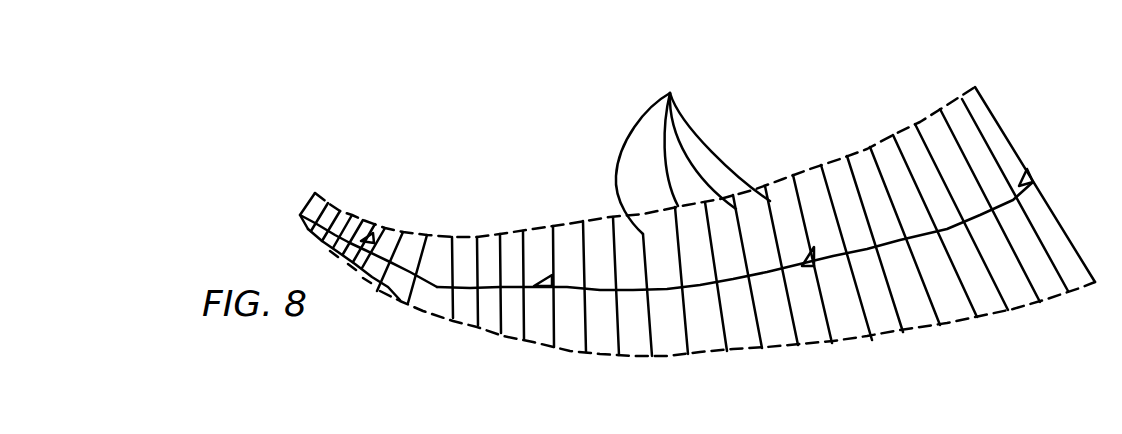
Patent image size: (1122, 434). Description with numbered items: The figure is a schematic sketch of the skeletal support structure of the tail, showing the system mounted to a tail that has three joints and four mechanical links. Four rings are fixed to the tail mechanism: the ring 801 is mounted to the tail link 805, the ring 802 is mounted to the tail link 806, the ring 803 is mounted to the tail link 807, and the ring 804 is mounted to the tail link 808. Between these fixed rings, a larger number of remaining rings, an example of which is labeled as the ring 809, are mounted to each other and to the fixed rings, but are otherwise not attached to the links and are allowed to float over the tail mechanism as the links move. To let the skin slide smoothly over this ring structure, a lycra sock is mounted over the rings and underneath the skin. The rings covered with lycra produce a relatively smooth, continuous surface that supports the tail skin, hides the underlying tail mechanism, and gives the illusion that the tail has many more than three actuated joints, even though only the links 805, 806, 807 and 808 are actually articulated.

The ring 801 is at (991, 112).
The ring 802 is at (793, 172).
The ring 803 is at (553, 225).
The ring 804 is at (386, 232).
The tail link 805 is at (982, 216).
The tail link 806 is at (783, 270).
The tail link 807 is at (600, 288).
The tail link 808 is at (400, 268).
The floating ring 809 is at (693, 152).